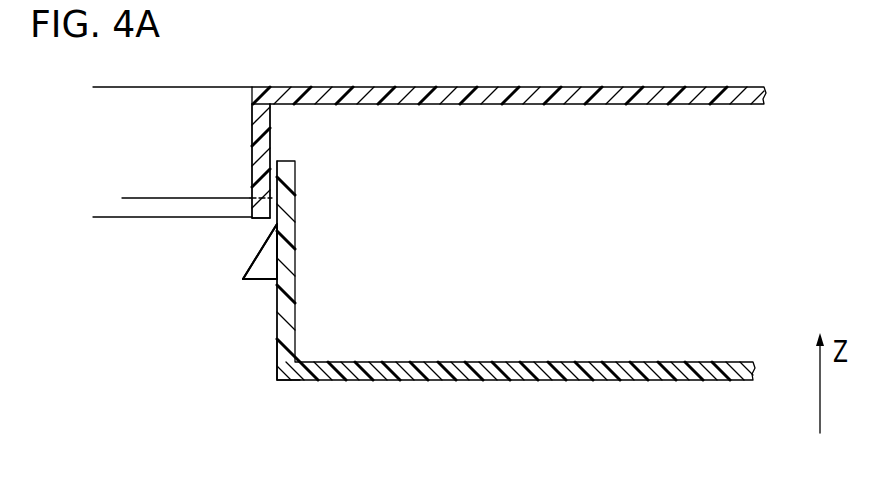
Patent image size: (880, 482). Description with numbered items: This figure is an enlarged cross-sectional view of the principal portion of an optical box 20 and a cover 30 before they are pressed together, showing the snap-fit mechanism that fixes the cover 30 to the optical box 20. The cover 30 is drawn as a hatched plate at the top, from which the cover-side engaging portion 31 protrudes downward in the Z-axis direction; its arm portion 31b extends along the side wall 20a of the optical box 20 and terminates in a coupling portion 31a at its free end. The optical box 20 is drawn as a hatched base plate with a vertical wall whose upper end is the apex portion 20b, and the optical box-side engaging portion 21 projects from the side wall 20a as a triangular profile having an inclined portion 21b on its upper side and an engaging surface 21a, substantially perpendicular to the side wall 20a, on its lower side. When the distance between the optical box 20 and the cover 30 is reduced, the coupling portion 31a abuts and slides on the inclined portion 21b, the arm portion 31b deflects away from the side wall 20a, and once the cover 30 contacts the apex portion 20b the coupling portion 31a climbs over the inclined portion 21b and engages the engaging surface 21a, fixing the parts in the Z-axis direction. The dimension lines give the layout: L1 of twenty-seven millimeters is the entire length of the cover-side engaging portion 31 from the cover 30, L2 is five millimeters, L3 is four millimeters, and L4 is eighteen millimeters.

The optical box 20 is at (538, 372).
The side wall 20a is at (276, 362).
The apex portion 20b is at (283, 161).
The optical box-side engaging portion 21 is at (238, 292).
The engaging surface 21a is at (253, 282).
The inclined portion 21b is at (250, 260).
The cover 30 is at (452, 98).
The cover-side engaging portion 31 is at (236, 152).
The coupling portion 31a is at (260, 218).
The arm portion 31b is at (260, 127).
The dimension L1 is at (102, 87).
The dimension L2 is at (133, 160).
The dimension L3 is at (298, 125).
The dimension L4 is at (297, 161).